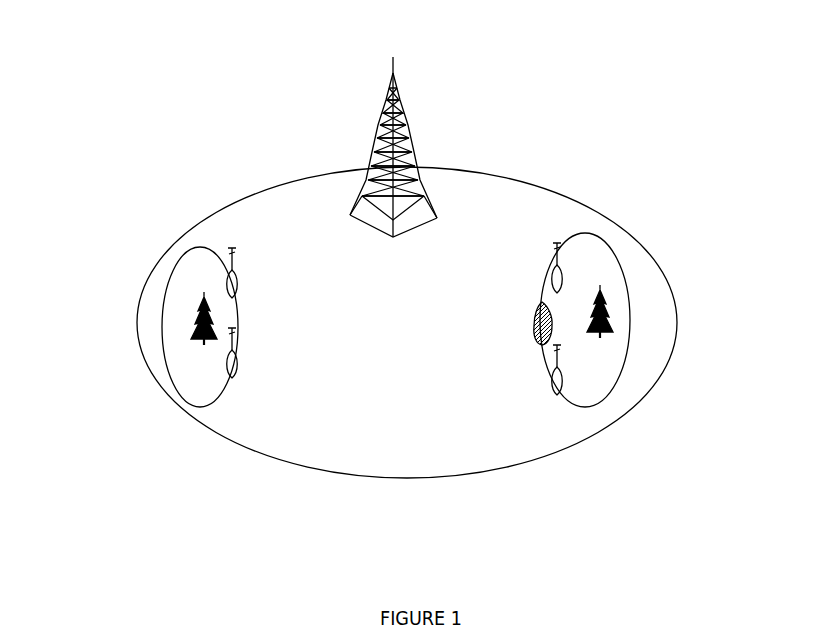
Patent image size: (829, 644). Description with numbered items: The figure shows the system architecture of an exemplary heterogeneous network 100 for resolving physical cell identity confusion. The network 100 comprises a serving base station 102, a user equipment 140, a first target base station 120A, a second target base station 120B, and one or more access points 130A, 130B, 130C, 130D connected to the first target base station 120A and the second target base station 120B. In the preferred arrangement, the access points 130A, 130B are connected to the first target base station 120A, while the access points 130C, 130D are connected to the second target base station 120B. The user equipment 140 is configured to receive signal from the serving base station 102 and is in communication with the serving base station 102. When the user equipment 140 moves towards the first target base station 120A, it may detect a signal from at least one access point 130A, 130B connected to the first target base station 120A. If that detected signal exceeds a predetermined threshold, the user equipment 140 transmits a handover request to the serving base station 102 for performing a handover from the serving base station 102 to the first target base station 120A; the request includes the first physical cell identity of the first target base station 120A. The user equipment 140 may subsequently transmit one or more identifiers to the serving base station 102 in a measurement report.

The heterogeneous network 100 is at (547, 45).
The serving base station 102 is at (413, 155).
The first target base station 120A is at (612, 318).
The second target base station 120B is at (190, 332).
The access point 130A is at (547, 272).
The access point 130B is at (545, 383).
The access point 130C is at (238, 282).
The access point 130D is at (238, 357).
The user equipment 140 is at (533, 330).